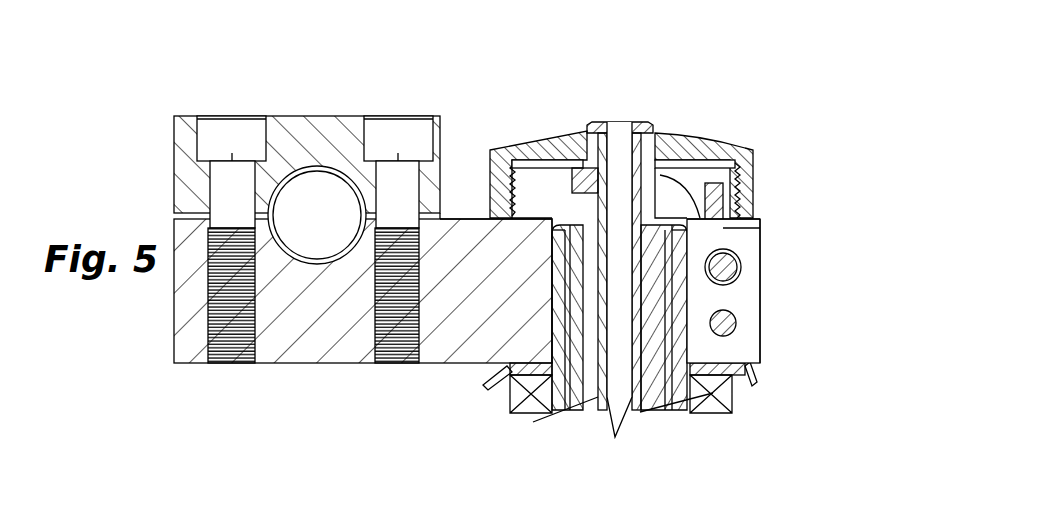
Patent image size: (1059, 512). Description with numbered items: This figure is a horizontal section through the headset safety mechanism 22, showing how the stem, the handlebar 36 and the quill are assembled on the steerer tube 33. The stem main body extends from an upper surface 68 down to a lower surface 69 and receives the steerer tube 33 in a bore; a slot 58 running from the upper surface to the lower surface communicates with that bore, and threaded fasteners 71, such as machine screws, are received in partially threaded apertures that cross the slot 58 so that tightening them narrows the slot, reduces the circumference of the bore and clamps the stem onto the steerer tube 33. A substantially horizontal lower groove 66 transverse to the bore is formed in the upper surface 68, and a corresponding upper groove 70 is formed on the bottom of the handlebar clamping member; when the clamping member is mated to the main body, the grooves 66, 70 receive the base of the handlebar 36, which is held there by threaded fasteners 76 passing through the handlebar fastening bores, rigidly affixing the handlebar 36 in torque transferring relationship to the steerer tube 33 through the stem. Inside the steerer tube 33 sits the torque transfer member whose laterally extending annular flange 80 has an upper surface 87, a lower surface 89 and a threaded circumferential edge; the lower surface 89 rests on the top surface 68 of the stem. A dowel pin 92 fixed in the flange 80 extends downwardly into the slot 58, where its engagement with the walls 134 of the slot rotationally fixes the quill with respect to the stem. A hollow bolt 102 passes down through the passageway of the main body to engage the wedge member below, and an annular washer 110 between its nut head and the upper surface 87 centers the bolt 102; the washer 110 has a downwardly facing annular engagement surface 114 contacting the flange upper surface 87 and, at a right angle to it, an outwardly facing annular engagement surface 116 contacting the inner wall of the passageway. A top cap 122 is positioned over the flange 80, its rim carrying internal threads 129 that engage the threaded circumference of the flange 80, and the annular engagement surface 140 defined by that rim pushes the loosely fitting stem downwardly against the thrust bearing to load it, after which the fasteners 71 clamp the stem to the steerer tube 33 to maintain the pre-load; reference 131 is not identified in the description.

The safety mechanism 22 is at (707, 78).
The steerer tube 33 is at (683, 395).
The handlebar 36 is at (306, 118).
The slot 58 is at (755, 242).
The lower groove 66 is at (298, 264).
The upper surface 68 is at (752, 218).
The lower surface 69 is at (320, 365).
The upper groove 70 is at (305, 168).
The threaded fasteners 71 is at (730, 270).
The threaded fasteners 76 is at (205, 115).
The annular flange 80 is at (690, 190).
The upper surface 87 is at (680, 185).
The lower surface 89 is at (498, 148).
The dowel pin 92 is at (760, 228).
The hollow bolt 102 is at (610, 123).
The annular washer 110 is at (567, 135).
The downwardly facing annular engagement surface 114 is at (553, 135).
The outwardly facing annular engagement surface 116 is at (533, 160).
The top cap 122 is at (750, 150).
The internal threads 129 is at (745, 176).
The block step 131 is at (495, 222).
The walls 134 is at (750, 300).
The annular engagement surface 140 is at (460, 218).